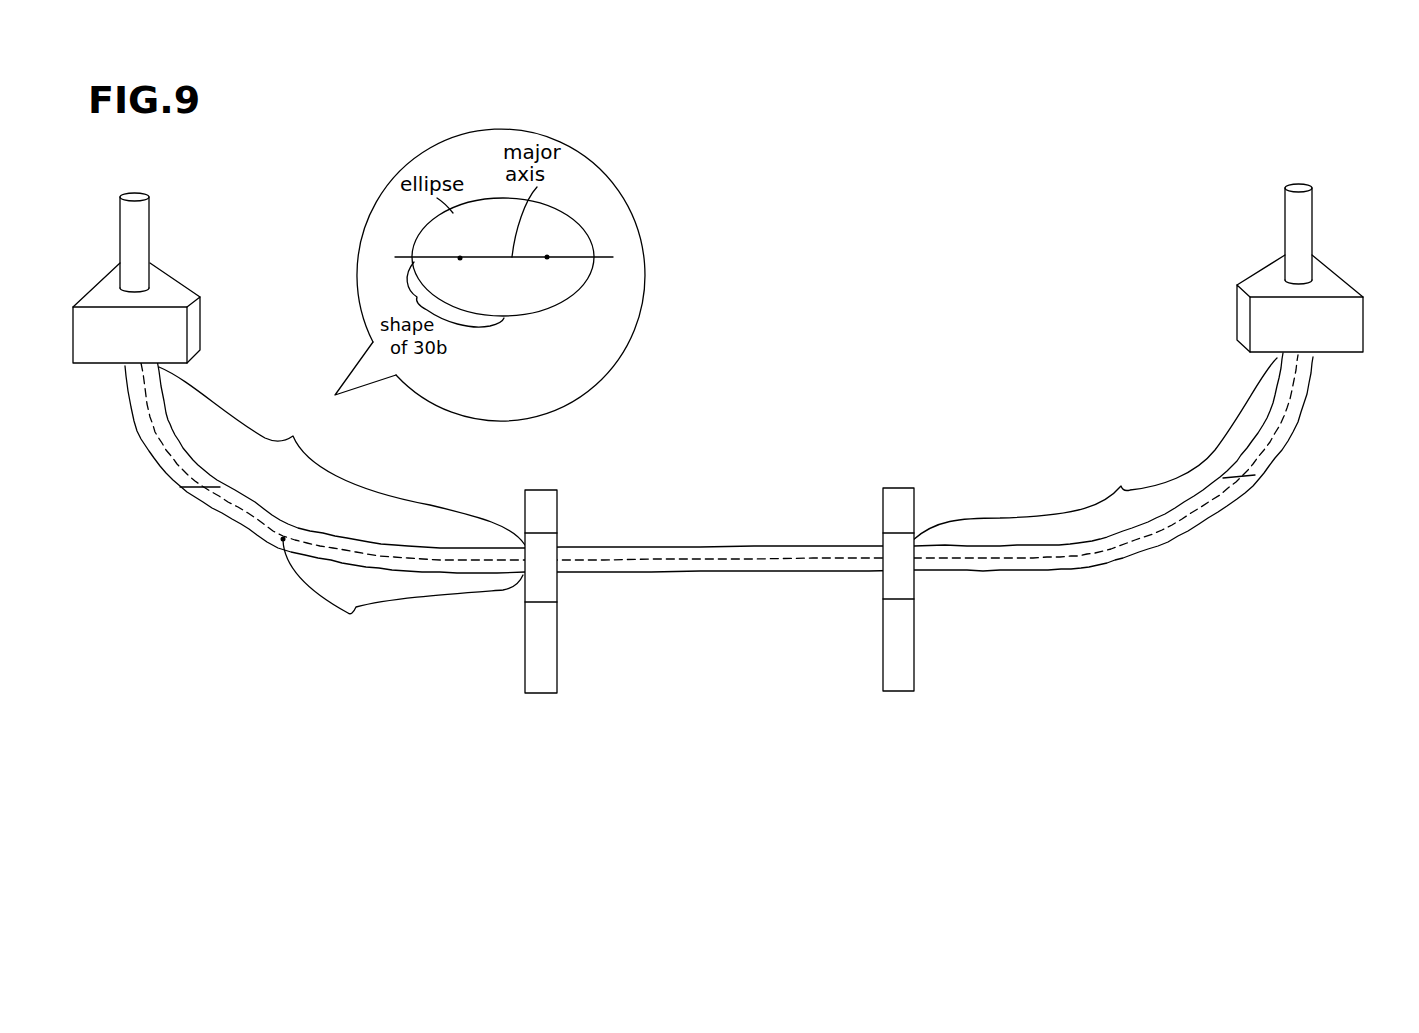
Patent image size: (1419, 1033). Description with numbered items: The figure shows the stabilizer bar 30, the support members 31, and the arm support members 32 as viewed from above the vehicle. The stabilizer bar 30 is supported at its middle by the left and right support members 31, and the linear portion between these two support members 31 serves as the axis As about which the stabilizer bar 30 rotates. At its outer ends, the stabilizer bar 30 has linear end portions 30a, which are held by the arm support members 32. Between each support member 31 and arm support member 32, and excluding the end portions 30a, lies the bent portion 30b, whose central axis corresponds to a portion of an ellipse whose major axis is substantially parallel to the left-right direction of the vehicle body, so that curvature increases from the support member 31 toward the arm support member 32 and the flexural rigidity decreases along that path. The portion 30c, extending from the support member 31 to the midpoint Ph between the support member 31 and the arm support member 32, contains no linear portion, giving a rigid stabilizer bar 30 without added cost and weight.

The stabilizer bar 30 is at (719, 515).
The end portions 30a is at (724, 318).
The portion 30b is at (718, 451).
The portion 30c is at (403, 596).
The support member 31 is at (548, 708).
The arm support member 32 is at (79, 380).
The axis As is at (652, 558).
The midpoint Ph is at (283, 540).